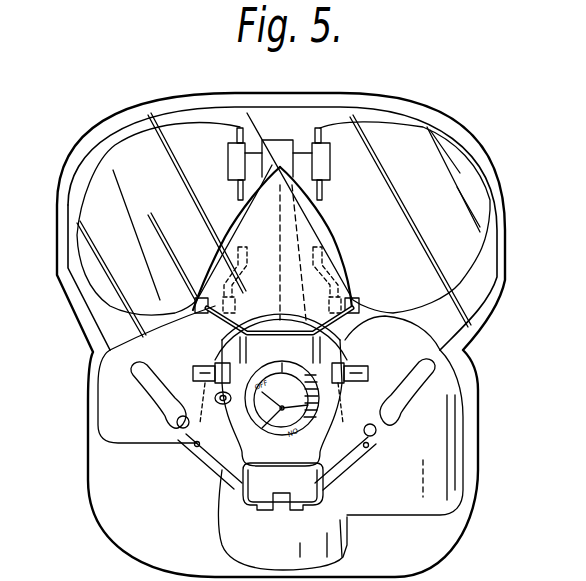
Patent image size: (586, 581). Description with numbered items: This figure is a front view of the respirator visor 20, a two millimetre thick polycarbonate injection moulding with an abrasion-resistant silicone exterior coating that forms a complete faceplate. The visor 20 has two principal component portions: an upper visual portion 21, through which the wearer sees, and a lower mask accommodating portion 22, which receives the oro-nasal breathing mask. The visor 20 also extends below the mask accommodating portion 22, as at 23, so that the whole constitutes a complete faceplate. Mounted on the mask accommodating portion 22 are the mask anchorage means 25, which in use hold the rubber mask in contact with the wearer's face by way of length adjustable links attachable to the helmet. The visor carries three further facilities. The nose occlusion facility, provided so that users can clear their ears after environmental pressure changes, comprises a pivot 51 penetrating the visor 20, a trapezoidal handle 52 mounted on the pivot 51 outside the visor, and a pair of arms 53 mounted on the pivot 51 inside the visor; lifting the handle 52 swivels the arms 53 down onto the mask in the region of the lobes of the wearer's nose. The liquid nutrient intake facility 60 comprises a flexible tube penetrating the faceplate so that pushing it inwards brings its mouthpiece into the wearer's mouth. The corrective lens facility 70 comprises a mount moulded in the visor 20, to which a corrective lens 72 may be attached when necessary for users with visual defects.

The visor 20 is at (85, 166).
The visual portion 21 is at (77, 255).
The corrective lens 72 is at (476, 198).
The corrective lens facility 70 is at (278, 143).
The arms 53 is at (233, 273).
The pivot 51 is at (352, 277).
The trapezoidal handle 52 is at (214, 322).
The mask accommodating portion 22 is at (107, 422).
The lower extension of the visor 23 is at (440, 533).
The liquid nutrient intake facility 60 is at (214, 402).
The mask anchorage means 25 is at (303, 477).